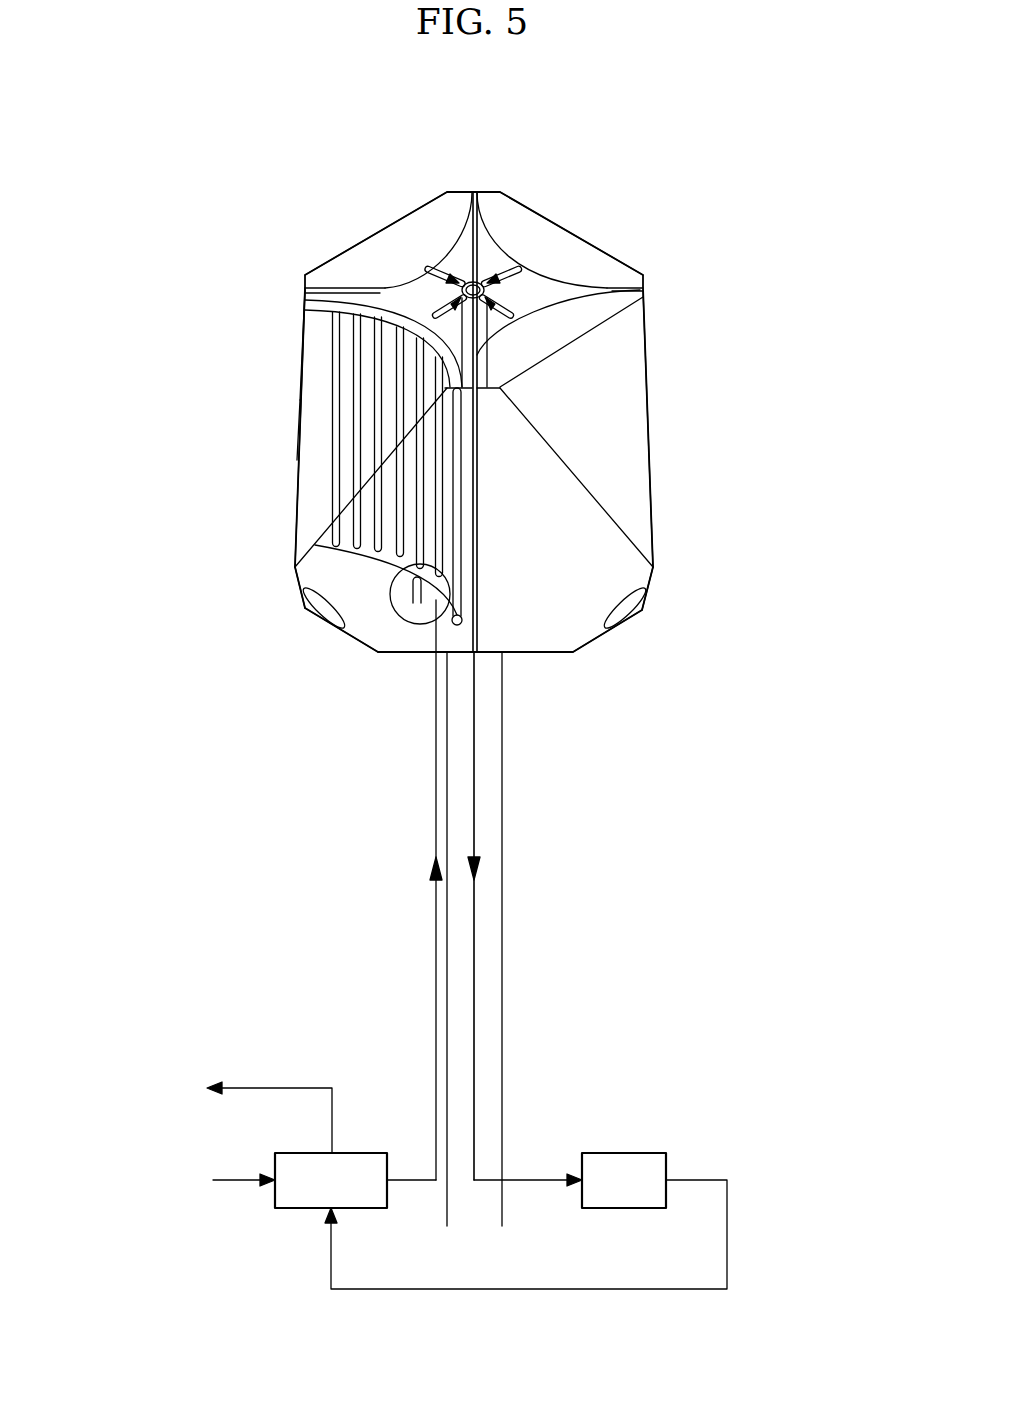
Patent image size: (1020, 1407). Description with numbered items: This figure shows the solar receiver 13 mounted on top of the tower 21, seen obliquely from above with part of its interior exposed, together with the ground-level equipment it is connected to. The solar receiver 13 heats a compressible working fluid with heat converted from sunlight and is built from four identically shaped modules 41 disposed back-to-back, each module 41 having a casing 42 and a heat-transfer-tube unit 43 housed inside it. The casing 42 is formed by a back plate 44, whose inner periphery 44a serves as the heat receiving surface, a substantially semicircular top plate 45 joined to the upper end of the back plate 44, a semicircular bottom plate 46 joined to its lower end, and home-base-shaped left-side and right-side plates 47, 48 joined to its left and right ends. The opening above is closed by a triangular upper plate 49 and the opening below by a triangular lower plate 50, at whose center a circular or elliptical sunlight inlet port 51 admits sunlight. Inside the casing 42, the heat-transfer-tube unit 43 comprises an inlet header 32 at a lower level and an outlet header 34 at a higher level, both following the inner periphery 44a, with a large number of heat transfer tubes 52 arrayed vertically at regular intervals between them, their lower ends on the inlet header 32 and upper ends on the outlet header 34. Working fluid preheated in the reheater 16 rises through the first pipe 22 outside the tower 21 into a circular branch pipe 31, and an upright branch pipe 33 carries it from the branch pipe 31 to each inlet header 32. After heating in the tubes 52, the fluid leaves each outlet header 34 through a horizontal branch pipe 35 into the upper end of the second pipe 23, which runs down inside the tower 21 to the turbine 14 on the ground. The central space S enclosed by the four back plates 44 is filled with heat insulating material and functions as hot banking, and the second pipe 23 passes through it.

The solar receiver 13 is at (477, 166).
The turbine 14 is at (628, 1152).
The reheater 16 is at (300, 1209).
The tower 21 is at (503, 935).
The first pipe 22 is at (435, 950).
The second pipe 23 is at (505, 336).
The branch pipe 31 is at (417, 614).
The inlet header 32 is at (465, 621).
The branch pipe 33 is at (416, 581).
The outlet header 34 is at (305, 298).
The branch pipe 35 is at (430, 300).
The module 41 is at (402, 235).
The casing 42 is at (285, 396).
The heat-transfer-tube unit 43 is at (311, 451).
The back plate 44 is at (590, 284).
The inner periphery 44a is at (323, 286).
The top plate 45 is at (641, 298).
The bottom plate 46 is at (390, 656).
The left-side plate 47 is at (552, 656).
The right-side plate 48 is at (372, 637).
The upper plate 49 is at (305, 500).
The lower plate 50 is at (296, 575).
The sunlight inlet port 51 is at (318, 612).
The heat transfer tube 52 is at (458, 490).
The space S is at (538, 283).